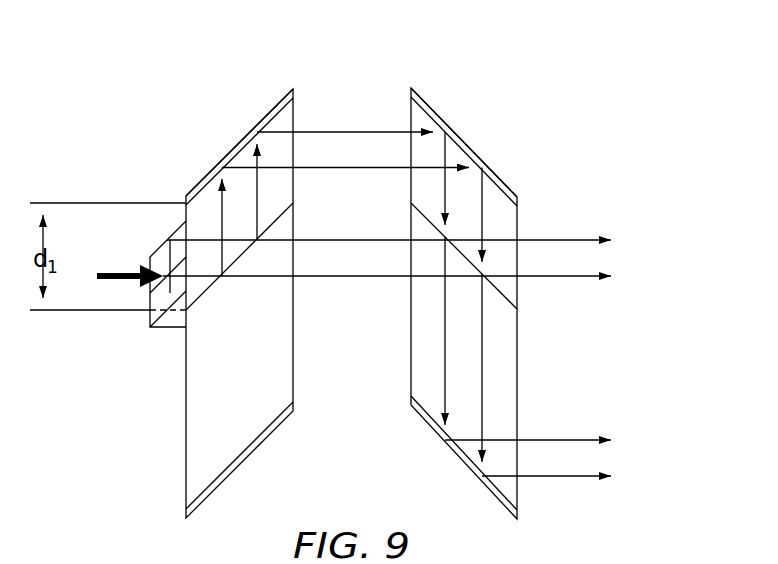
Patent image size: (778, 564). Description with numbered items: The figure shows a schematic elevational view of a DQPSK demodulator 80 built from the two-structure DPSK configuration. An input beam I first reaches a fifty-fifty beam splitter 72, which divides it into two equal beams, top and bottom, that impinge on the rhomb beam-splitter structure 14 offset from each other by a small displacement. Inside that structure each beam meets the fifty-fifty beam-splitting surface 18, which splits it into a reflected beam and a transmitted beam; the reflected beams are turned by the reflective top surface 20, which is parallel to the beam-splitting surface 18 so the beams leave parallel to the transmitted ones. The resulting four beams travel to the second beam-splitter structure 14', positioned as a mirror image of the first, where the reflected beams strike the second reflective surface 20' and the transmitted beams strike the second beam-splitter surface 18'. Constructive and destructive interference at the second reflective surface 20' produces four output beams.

The DQPSK demodulator 80 is at (397, 62).
The rhomb beam-splitter structure 14 is at (258, 303).
The second beam-splitter structure 14' is at (443, 303).
The reflective top surface 20 is at (269, 137).
The second reflective surface 20' is at (489, 147).
The beam-splitting surface 18 is at (239, 273).
The second beam-splitter surface 18' is at (499, 257).
The 50/50 beam splitter 72 is at (150, 327).